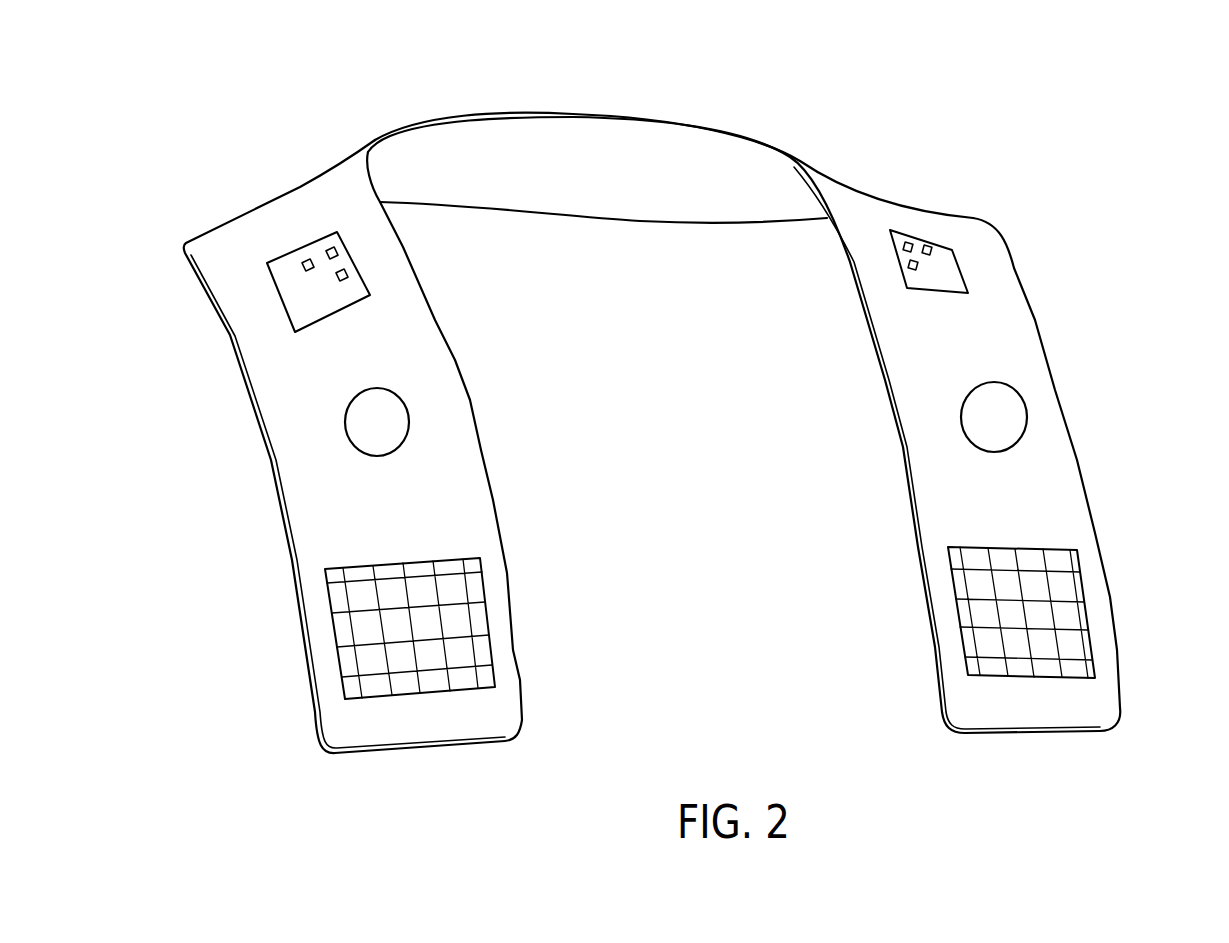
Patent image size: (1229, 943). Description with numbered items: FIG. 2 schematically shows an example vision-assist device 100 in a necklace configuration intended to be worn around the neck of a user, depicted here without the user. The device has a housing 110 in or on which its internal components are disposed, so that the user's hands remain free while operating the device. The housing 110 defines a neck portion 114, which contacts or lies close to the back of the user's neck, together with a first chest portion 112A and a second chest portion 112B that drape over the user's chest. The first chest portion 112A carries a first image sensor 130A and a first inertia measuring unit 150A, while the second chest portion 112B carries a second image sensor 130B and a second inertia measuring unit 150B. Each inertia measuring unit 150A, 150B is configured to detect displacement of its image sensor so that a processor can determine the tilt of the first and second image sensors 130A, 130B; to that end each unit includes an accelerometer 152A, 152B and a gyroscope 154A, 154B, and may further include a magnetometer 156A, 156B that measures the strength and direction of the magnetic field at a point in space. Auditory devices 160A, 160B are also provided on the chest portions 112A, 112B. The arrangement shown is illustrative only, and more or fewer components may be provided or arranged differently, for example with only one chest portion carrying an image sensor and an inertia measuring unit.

The vision-assist device 100 is at (1078, 213).
The housing 110 is at (327, 172).
The first chest portion 112A is at (295, 472).
The second chest portion 112B is at (1005, 333).
The neck portion 114 is at (547, 110).
The first image sensor 130A is at (381, 400).
The second image sensor 130B is at (975, 398).
The first inertia measuring unit 150A is at (280, 302).
The second inertia measuring unit 150B is at (922, 235).
The accelerometer 152A is at (307, 262).
The accelerometer 152B is at (933, 250).
The gyroscope 154A is at (340, 254).
The gyroscope 154B is at (903, 245).
The magnetometer 156A is at (352, 273).
The magnetometer 156B is at (915, 272).
The auditory device 160A is at (334, 630).
The auditory device 160B is at (1092, 608).